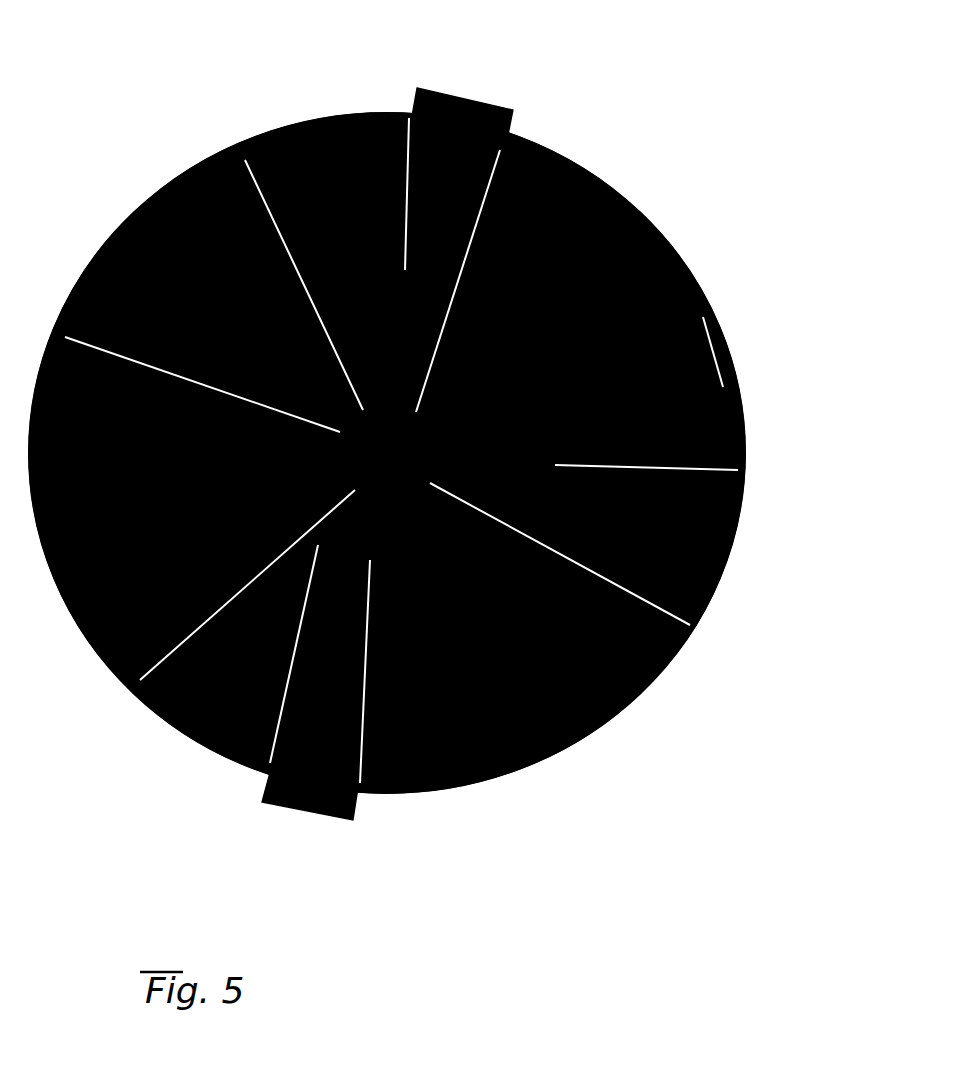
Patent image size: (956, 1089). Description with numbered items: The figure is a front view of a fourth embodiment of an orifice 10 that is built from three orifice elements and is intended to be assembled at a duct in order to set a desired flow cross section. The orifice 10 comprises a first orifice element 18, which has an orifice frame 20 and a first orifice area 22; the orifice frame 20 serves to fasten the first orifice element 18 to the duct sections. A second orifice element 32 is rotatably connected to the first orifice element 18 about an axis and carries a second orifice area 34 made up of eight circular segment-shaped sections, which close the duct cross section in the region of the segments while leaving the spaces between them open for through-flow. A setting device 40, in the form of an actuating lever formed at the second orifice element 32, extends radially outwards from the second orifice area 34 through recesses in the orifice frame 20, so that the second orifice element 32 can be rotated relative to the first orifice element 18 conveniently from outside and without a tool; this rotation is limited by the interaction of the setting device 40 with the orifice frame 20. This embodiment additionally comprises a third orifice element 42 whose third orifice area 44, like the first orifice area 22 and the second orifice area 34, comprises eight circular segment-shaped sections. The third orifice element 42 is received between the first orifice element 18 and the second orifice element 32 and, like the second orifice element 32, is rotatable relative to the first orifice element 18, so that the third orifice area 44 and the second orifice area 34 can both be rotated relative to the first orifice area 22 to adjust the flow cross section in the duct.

The orifice 10 is at (630, 79).
The first orifice element 18 is at (690, 248).
The orifice frame 20 is at (703, 291).
The first orifice area 22 is at (573, 162).
The second orifice element 32 is at (707, 602).
The second orifice area 34 is at (733, 367).
The setting device 40 is at (462, 96).
The third orifice element 42 is at (503, 773).
The third orifice area 44 is at (227, 760).